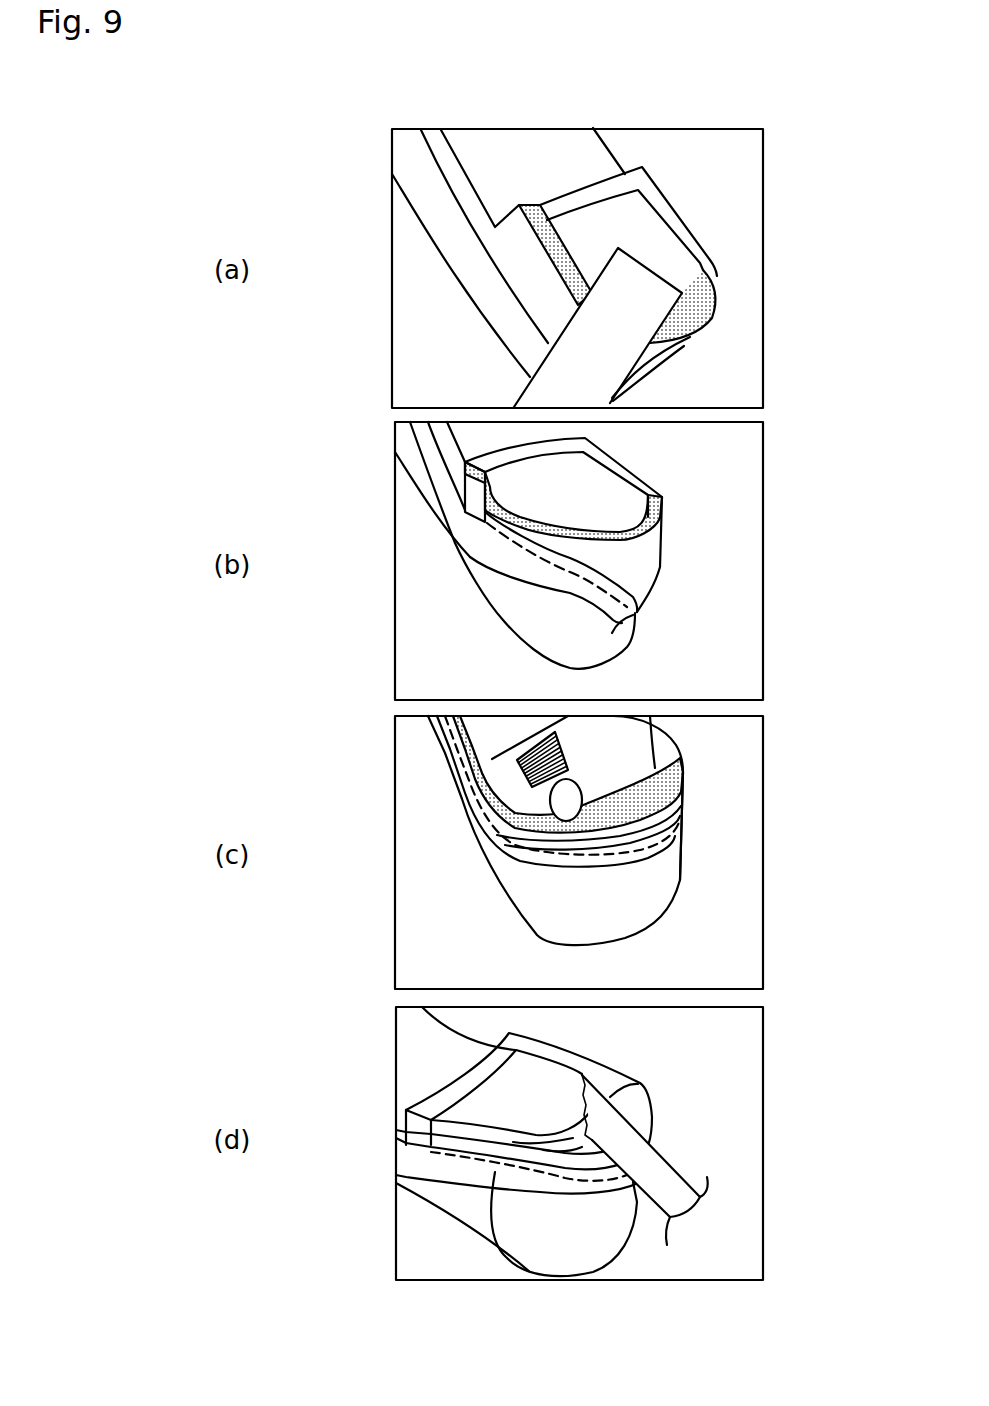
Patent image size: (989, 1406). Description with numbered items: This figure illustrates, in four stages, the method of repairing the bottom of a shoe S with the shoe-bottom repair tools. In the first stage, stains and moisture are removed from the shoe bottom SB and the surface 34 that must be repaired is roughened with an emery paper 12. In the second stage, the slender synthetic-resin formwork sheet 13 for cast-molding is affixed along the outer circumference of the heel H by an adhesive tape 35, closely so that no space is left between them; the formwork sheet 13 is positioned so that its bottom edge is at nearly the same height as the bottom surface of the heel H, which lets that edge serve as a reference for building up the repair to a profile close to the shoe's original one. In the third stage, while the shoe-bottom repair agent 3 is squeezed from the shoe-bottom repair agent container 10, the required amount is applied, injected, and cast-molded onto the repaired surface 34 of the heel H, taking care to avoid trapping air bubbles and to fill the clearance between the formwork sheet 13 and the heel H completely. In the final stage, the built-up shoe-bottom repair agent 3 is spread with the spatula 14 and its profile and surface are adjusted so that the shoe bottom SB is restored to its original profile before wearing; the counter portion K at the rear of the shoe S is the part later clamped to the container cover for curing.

The shoe S is at (617, 152).
The shoe bottom SB is at (678, 215).
The emery paper 12 is at (645, 285).
The repaired surface 34 is at (705, 303).
The heel portion H is at (673, 345).
The formwork sheet 13 is at (617, 560).
The adhesive tape 35 is at (490, 535).
The shoe-bottom repair agent container 10 is at (483, 733).
The shoe-bottom repair agent 3 is at (562, 803).
The counter portion K is at (660, 878).
The spatula 14 is at (672, 1188).